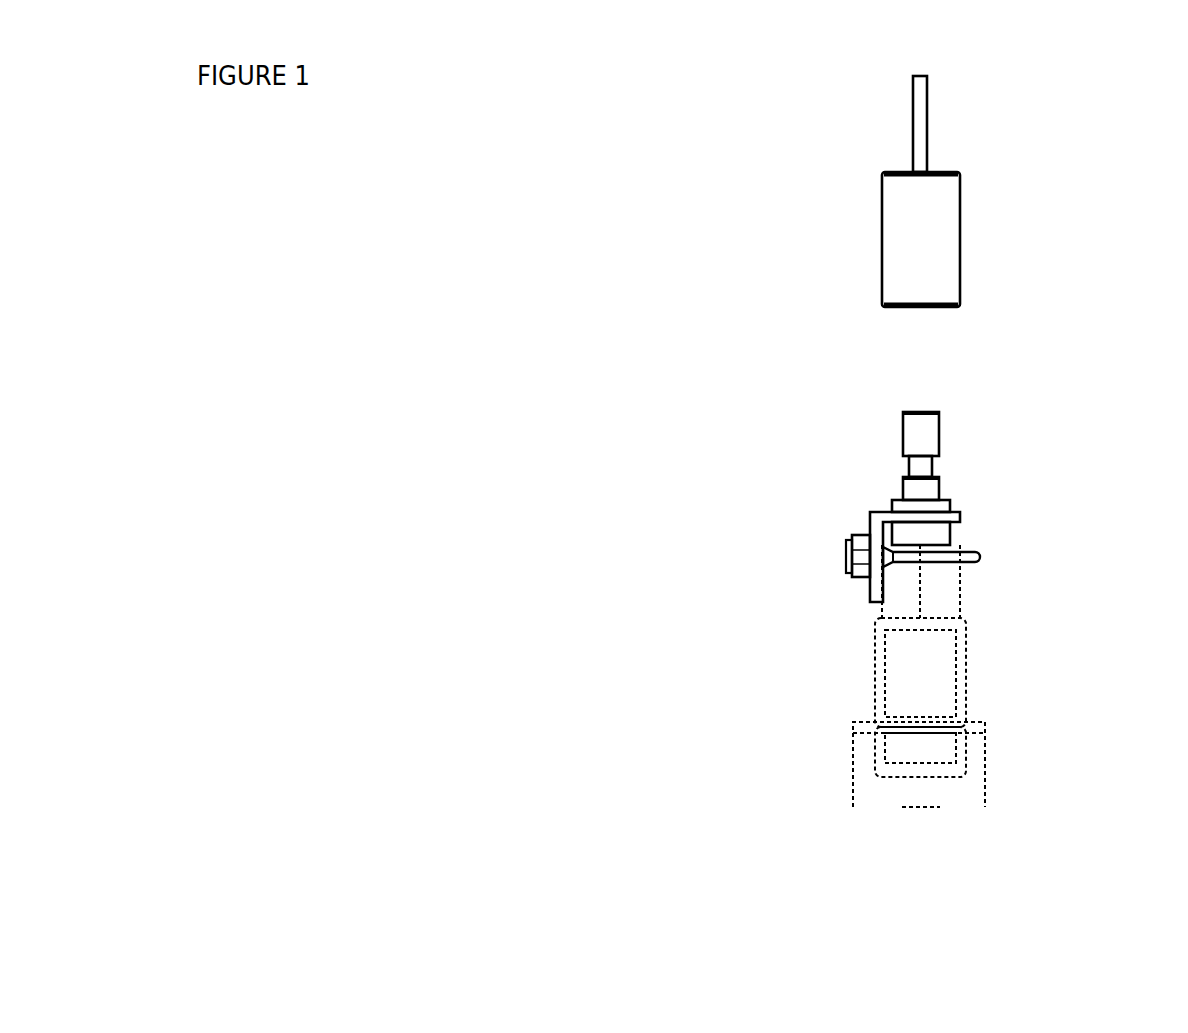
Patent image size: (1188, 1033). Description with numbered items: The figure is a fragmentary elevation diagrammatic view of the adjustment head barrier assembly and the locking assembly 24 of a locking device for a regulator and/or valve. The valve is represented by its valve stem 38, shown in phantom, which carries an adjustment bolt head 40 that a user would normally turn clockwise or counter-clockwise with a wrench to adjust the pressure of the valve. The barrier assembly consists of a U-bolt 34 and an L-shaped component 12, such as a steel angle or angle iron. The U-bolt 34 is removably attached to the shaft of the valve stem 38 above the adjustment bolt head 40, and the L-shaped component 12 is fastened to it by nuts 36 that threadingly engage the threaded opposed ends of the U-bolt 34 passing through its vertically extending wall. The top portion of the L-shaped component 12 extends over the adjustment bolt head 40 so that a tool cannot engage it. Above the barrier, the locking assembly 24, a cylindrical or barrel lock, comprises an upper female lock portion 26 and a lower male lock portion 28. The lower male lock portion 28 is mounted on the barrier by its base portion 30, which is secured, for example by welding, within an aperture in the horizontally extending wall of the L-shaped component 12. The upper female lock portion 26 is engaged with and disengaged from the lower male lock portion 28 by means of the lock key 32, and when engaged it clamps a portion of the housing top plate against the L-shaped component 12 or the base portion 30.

The L-shaped component 12 is at (935, 512).
The locking assembly 24 is at (880, 427).
The upper female lock portion 26 is at (920, 266).
The lower male lock portion 28 is at (923, 465).
The base portion 30 is at (938, 532).
The lock key 32 is at (922, 131).
The U-bolt 34 is at (945, 557).
The nuts 36 is at (857, 558).
The valve stem 38 is at (923, 700).
The adjustment bolt head 40 is at (885, 578).